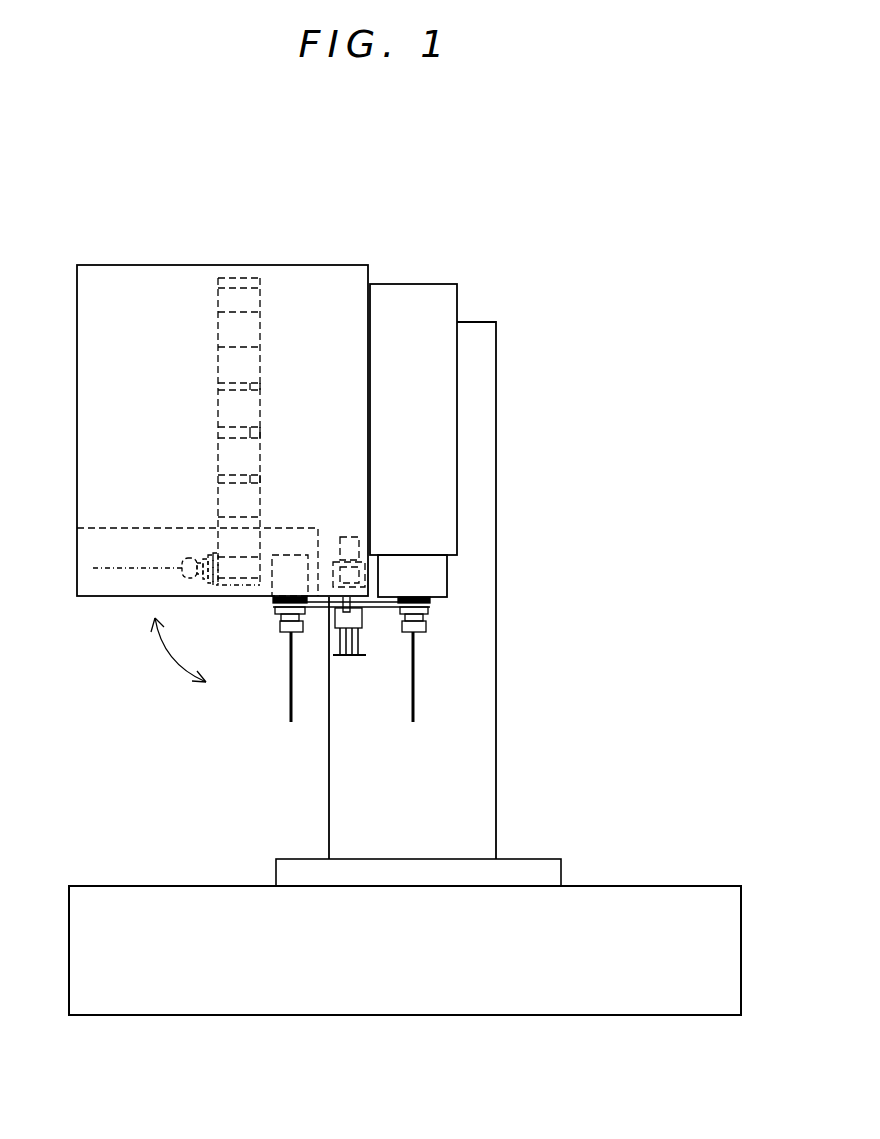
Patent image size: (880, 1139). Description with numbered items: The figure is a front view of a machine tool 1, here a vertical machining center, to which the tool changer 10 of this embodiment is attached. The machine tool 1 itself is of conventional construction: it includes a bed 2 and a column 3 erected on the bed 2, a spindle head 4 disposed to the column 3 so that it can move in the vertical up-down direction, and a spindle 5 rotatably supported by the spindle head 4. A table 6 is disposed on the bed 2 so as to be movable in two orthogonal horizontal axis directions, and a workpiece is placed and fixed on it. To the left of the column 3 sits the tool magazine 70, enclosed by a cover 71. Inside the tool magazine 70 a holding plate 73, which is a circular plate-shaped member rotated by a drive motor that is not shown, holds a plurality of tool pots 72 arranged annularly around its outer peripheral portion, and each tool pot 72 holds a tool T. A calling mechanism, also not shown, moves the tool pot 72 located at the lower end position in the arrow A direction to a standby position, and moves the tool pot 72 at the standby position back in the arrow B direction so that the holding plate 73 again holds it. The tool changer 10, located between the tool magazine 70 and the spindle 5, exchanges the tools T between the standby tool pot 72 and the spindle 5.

The machine tool 1 is at (615, 229).
The bed 2 is at (647, 890).
The column 3 is at (493, 386).
The spindle head 4 is at (432, 287).
The spindle 5 is at (443, 578).
The table 6 is at (552, 858).
The tool changer 10 is at (334, 664).
The tool magazine 70 is at (222, 374).
The cover 71 is at (153, 265).
The tool pot 72 is at (228, 399).
The holding plate 73 is at (262, 433).
The tool T is at (280, 630).